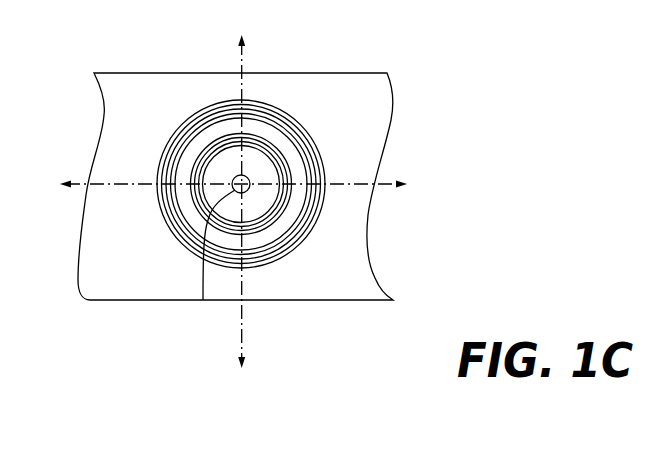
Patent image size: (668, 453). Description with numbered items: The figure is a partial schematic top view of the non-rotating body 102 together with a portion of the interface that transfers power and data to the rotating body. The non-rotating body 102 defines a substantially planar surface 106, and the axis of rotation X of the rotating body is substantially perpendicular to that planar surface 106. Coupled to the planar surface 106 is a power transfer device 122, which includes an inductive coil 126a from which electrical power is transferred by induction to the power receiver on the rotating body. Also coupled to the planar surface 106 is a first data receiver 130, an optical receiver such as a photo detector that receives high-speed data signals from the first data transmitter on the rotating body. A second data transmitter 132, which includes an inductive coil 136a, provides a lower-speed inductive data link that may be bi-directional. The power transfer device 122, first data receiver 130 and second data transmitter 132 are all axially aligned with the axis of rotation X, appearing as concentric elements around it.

The non-rotating body 102 is at (352, 301).
The planar surface 106 is at (347, 256).
The power transfer device 122 is at (267, 104).
The inductive coil 126a is at (290, 115).
The first data receiver 130 is at (248, 178).
The second data transmitter 132 is at (280, 163).
The inductive coil 136a is at (290, 175).
The axis of rotation X is at (203, 300).